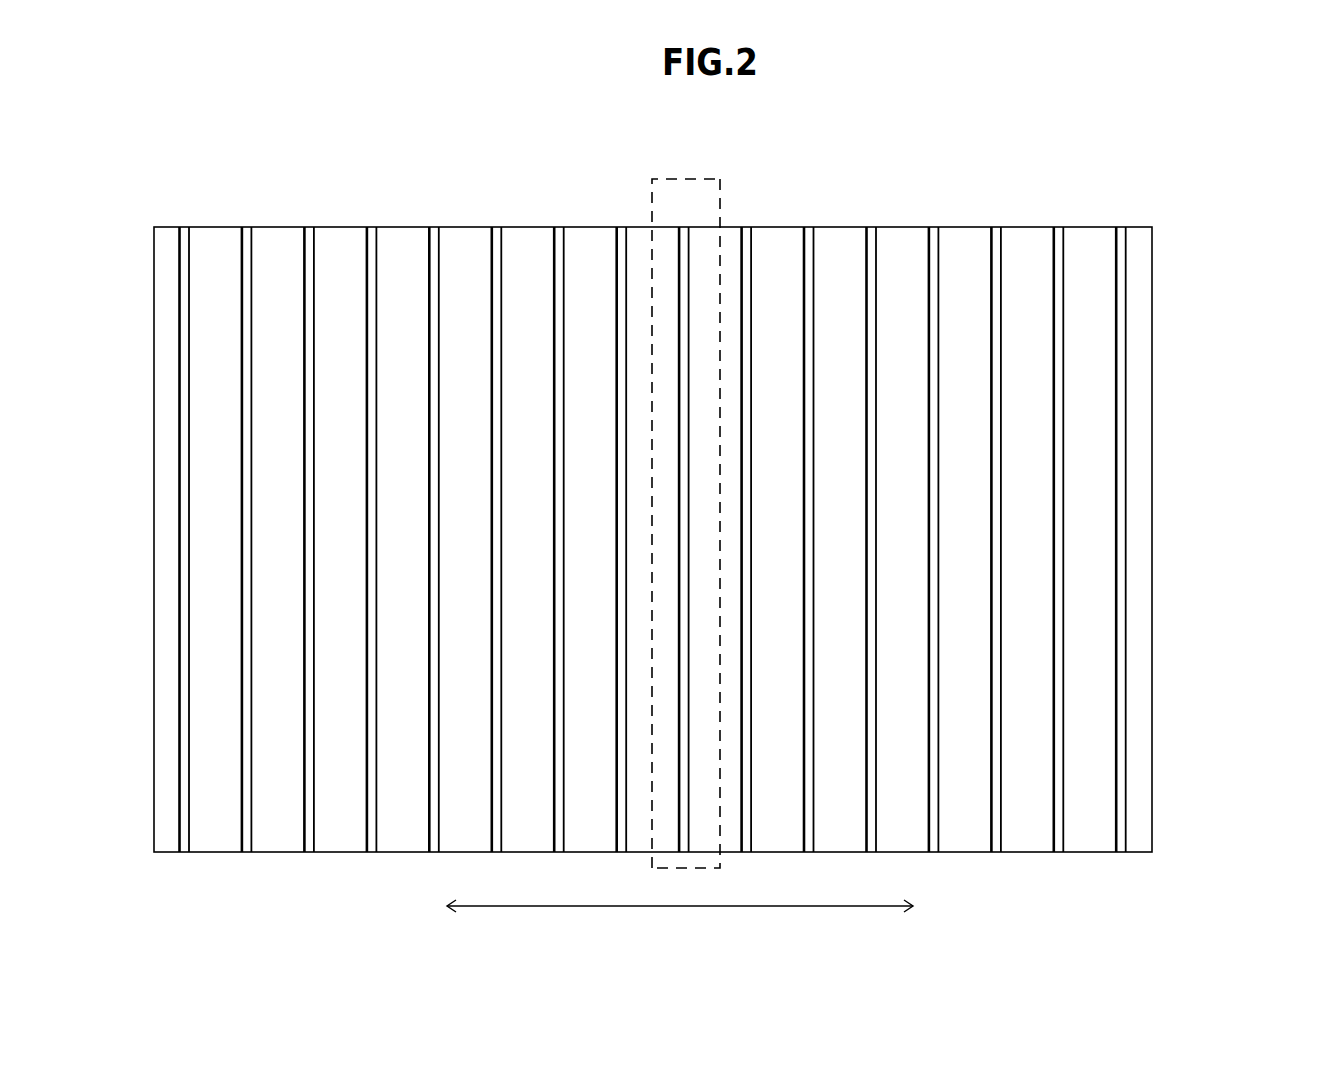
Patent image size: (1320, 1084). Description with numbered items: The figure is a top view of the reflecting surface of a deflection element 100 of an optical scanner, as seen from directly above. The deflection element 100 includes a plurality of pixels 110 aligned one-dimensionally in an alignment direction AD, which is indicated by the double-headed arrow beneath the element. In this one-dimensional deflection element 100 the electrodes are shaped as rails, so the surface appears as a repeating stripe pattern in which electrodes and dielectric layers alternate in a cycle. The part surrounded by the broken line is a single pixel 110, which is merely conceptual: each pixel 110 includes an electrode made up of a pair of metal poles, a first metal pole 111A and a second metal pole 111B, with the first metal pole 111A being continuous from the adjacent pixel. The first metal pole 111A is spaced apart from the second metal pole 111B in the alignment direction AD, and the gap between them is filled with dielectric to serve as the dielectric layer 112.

The deflection element 100 is at (1147, 205).
The pixel 110 is at (725, 273).
The first metal pole 111A is at (642, 228).
The second metal pole 111B is at (705, 228).
The dielectric layer 112 is at (685, 228).
The alignment direction AD is at (692, 907).